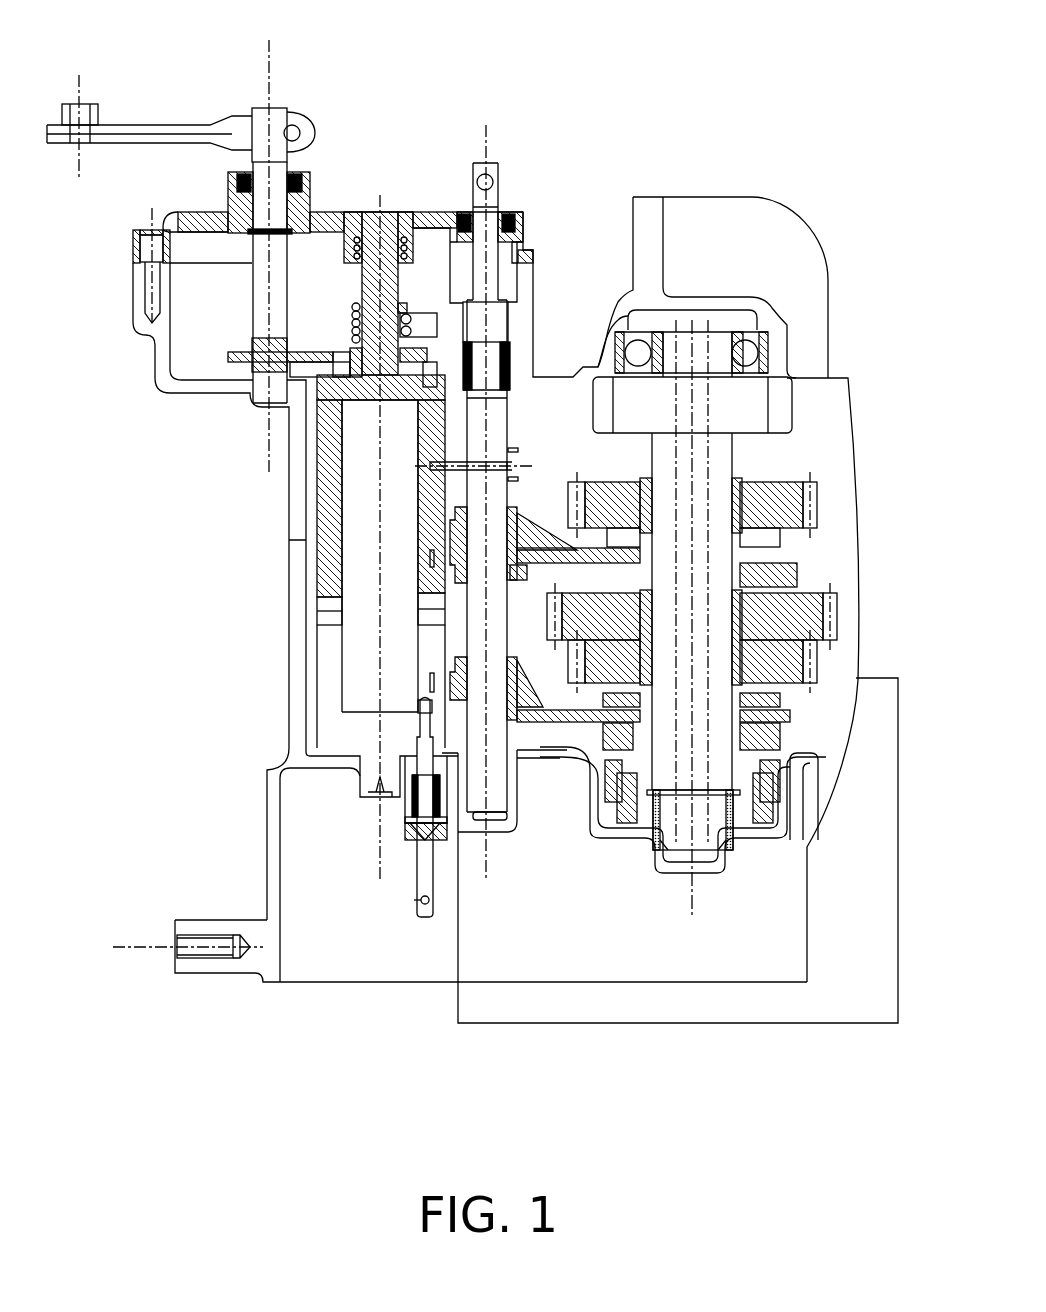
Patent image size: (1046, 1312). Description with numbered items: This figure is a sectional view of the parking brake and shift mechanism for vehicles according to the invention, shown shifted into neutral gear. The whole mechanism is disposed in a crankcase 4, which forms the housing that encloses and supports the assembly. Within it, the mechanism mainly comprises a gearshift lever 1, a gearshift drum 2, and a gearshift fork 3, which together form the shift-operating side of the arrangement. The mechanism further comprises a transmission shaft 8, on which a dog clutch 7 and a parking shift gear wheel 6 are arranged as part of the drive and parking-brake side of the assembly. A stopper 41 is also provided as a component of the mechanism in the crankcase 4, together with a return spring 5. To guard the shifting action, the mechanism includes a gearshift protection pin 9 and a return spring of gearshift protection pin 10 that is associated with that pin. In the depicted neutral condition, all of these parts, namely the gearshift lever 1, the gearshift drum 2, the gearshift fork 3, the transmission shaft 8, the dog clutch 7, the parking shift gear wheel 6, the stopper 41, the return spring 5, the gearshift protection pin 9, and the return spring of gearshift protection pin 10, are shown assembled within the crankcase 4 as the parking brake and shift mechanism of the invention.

The gearshift lever 1 is at (262, 128).
The gearshift drum 2 is at (355, 732).
The gearshift fork 3 is at (567, 728).
The crankcase 4 is at (640, 840).
The stopper 41 is at (780, 808).
The return spring 5 is at (755, 806).
The parking shift gear wheel 6 is at (752, 780).
The dog clutch 7 is at (748, 740).
The transmission shaft 8 is at (722, 690).
The gearshift protection pin 9 is at (428, 858).
The return spring of gearshift protection pin 10 is at (407, 805).